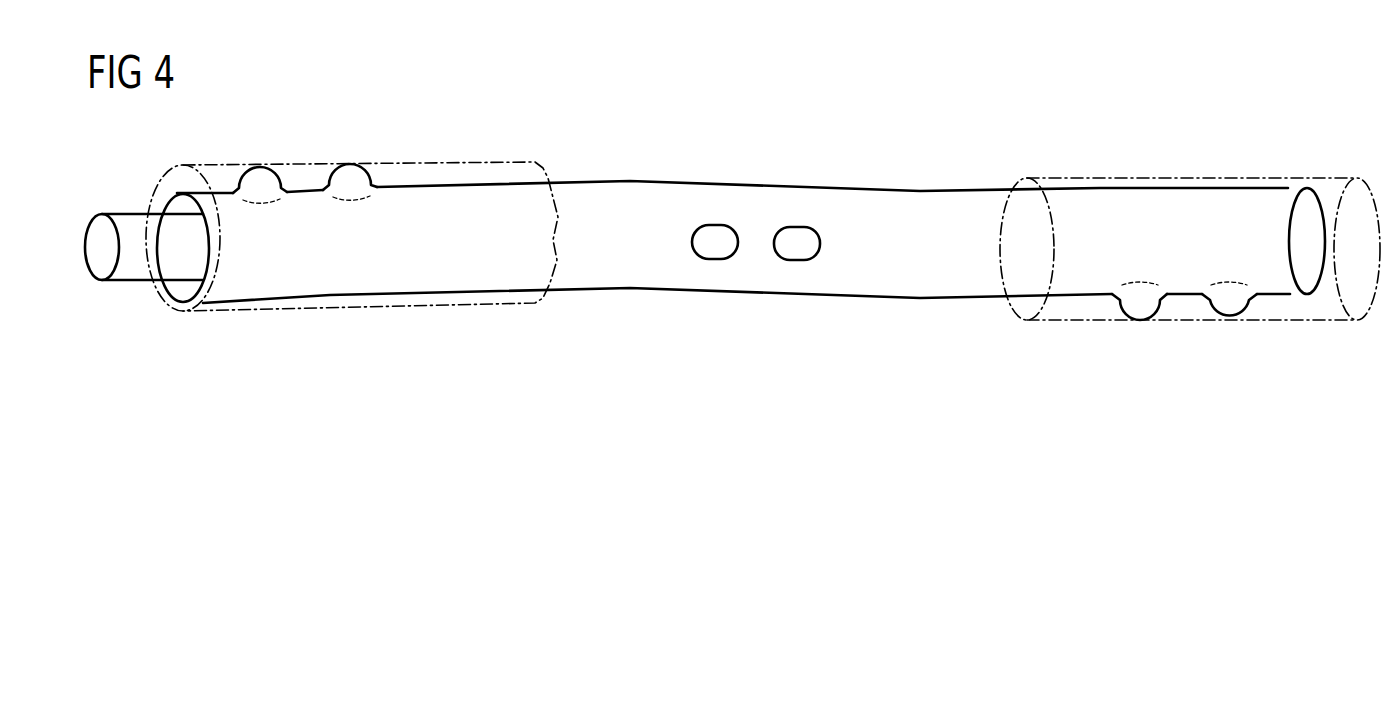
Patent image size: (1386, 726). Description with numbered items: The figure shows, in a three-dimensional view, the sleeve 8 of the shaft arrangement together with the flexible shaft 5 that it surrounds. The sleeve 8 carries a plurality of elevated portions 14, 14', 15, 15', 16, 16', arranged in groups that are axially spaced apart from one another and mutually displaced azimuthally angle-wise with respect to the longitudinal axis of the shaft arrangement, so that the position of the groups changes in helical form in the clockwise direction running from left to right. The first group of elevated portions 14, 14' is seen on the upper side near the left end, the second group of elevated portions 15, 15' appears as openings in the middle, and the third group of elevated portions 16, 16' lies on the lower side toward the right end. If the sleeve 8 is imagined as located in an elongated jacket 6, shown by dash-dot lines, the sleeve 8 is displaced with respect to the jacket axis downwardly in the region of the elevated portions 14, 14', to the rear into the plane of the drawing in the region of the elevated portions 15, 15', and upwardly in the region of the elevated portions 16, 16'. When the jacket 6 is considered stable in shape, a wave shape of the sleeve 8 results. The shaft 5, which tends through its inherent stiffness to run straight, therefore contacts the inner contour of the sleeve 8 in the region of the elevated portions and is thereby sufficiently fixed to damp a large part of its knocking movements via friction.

The flexible shaft 5 is at (133, 227).
The jacket 6 is at (1235, 177).
The sleeve 8 is at (1002, 243).
The elevated portion 14 is at (260, 155).
The elevated portion 14' is at (348, 153).
The elevated portion 15 is at (684, 246).
The elevated portion 15' is at (828, 251).
The elevated portion 16 is at (1139, 331).
The elevated portion 16' is at (1229, 331).